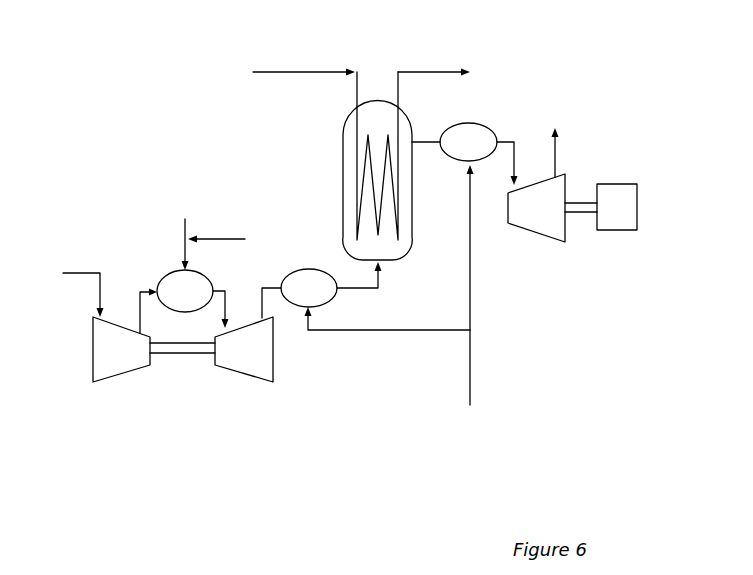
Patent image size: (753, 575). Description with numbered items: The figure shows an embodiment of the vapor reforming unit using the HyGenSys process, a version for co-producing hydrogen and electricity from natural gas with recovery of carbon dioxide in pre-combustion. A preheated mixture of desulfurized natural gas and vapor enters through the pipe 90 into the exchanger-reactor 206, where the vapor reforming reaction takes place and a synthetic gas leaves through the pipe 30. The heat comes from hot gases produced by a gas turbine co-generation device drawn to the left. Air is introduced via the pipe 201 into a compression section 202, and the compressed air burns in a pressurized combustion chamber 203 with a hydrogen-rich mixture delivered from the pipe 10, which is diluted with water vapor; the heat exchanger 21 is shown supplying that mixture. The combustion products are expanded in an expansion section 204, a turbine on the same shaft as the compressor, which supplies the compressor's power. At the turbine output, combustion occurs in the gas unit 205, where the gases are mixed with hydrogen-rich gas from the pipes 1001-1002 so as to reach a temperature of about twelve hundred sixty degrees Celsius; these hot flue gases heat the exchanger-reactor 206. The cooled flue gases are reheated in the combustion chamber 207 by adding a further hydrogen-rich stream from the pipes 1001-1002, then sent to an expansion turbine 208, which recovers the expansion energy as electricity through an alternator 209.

The pipe 201 is at (82, 273).
The compression section 202 is at (123, 353).
The combustion chamber 203 is at (177, 288).
The expansion section 204 is at (257, 353).
The pipe 10 is at (183, 230).
The heat exchanger 21 is at (229, 241).
The gas unit 205 is at (311, 290).
The exchanger-reactor 206 is at (378, 125).
The pipe 90 is at (305, 72).
The pipe 30 is at (428, 72).
The combustion chamber 207 is at (469, 138).
The expansion turbine 208 is at (538, 211).
The alternator 209 is at (627, 211).
The pipes 1001-1002 is at (470, 382).